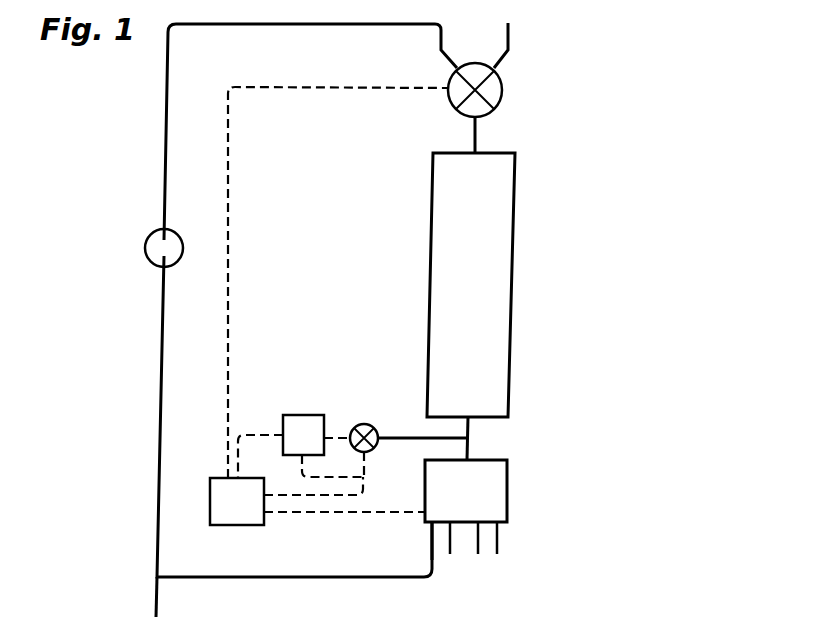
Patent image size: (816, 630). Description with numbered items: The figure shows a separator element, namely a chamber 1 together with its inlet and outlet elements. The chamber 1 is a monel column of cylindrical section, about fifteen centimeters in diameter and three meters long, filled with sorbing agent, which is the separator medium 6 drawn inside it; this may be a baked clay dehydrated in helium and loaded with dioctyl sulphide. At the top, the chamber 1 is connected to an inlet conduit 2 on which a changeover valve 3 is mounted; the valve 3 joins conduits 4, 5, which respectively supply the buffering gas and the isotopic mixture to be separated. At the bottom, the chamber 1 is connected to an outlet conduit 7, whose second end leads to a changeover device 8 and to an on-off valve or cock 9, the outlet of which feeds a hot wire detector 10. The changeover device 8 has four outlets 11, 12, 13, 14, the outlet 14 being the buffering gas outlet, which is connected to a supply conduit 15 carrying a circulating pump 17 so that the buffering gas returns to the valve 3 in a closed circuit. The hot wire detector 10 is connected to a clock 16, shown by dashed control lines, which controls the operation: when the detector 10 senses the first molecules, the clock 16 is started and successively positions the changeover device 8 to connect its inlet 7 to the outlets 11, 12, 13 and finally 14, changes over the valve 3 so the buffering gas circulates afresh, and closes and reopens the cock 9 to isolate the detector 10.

The chamber 1 is at (488, 285).
The inlet conduit 2 is at (470, 130).
The changeover valve 3 is at (500, 97).
The conduit 4 is at (438, 44).
The conduit 5 is at (510, 43).
The separator medium 6 is at (485, 361).
The outlet conduit 7 is at (470, 447).
The changeover device 8 is at (495, 504).
The on-off valve or cock 9 is at (365, 422).
The hot wire detector 10 is at (297, 420).
The outlet 11 is at (497, 553).
The outlet 12 is at (478, 553).
The outlet 13 is at (450, 553).
The outlet 14 is at (430, 544).
The supply conduit 15 is at (163, 305).
The clock 16 is at (238, 518).
The circulating pump 17 is at (150, 236).